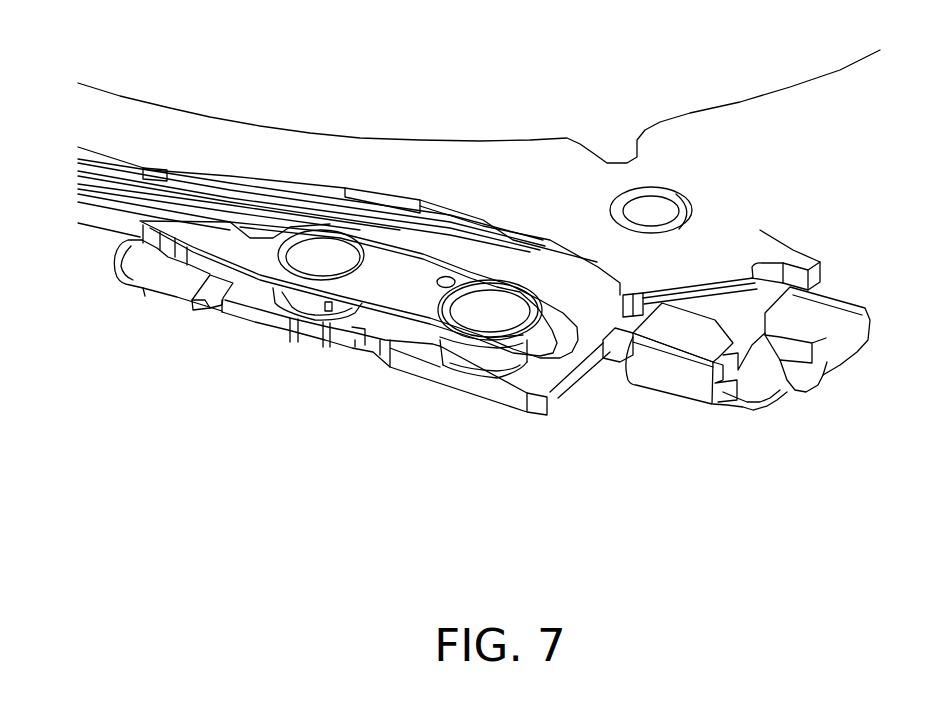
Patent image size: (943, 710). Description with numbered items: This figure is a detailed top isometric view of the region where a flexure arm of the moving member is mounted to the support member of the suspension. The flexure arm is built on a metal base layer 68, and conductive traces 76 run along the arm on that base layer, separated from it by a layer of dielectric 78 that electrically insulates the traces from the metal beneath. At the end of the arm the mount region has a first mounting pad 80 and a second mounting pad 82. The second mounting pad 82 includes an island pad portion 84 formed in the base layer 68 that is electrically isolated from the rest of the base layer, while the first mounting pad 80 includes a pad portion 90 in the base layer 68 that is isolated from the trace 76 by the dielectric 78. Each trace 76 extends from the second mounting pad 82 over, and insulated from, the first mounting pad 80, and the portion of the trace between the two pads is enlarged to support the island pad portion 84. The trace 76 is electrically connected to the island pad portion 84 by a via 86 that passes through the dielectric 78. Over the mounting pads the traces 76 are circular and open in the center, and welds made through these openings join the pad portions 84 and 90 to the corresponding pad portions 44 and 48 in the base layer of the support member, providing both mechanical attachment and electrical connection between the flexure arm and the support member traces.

The pad portion 44 is at (540, 410).
The pad portion 48 is at (233, 323).
The base layer 68 is at (137, 243).
The conductive traces 76 is at (375, 283).
The dielectric 78 is at (220, 258).
The first mounting pad 80 is at (293, 322).
The second mounting pad 82 is at (447, 363).
The island pad portion 84 is at (497, 375).
The via 86 is at (449, 278).
The pad portion 90 is at (327, 323).